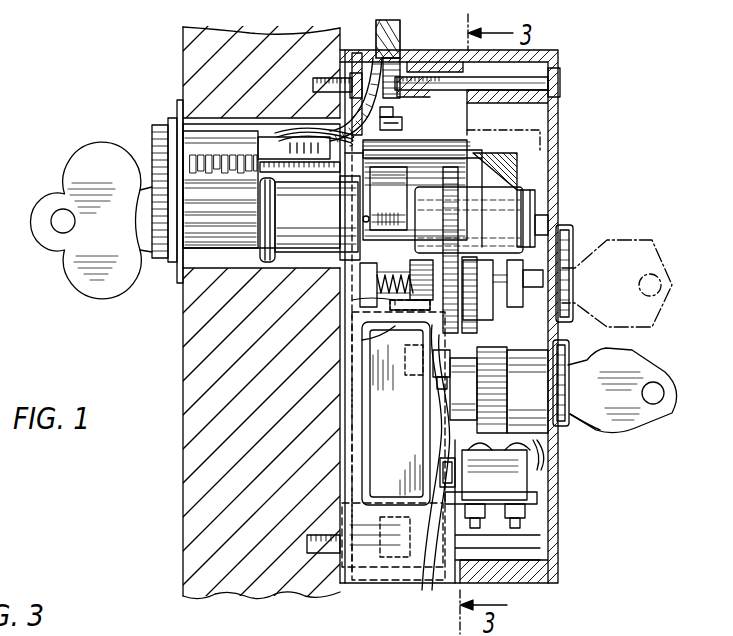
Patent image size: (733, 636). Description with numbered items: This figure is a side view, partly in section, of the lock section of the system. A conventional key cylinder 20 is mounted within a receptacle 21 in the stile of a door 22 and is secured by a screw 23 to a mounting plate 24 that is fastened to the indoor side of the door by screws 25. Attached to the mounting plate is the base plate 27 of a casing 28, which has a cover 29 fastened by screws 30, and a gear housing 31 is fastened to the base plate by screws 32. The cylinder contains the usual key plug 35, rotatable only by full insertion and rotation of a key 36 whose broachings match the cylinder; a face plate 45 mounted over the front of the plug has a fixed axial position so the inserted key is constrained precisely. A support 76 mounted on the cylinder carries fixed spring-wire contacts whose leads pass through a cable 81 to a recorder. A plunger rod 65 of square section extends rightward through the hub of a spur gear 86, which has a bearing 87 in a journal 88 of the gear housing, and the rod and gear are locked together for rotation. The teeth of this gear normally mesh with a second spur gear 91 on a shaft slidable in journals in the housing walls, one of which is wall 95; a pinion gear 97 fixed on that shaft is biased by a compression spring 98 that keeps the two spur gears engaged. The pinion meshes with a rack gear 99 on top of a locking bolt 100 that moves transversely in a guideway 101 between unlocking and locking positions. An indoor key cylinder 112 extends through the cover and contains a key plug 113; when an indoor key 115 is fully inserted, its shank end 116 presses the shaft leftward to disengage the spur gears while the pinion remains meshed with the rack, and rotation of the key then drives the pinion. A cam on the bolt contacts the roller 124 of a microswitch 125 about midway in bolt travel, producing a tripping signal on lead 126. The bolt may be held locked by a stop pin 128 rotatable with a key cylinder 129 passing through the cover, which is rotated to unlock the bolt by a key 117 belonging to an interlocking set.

The key cylinder 20 is at (206, 250).
The receptacle 21 is at (190, 126).
The door 22 is at (183, 365).
The screw 23 is at (330, 182).
The mounting plate 24 is at (340, 67).
The screws 25 is at (358, 80).
The base plate 27 is at (352, 118).
The casing 28 is at (425, 62).
The cover 29 is at (558, 139).
The screws 30 is at (560, 87).
The gear housing 31 is at (476, 147).
The screws 32 is at (402, 125).
The key plug 35 is at (318, 249).
The key 36 is at (82, 272).
The face plate 45 is at (160, 150).
The plunger rod 65 is at (390, 215).
The support 76 is at (272, 150).
The cable 81 is at (403, 59).
The spur gear 86 is at (442, 180).
The bearing 87 is at (536, 207).
The journal 88 is at (514, 195).
The spur gear 91 is at (412, 338).
The wall 95 is at (390, 303).
The pinion gear 97 is at (414, 268).
The compression spring 98 is at (375, 283).
The rack gear 99 is at (396, 320).
The locking bolt 100 is at (378, 448).
The guideway 101 is at (362, 505).
The key cylinder 112 is at (573, 238).
The key plug 113 is at (556, 341).
The indoor key 115 is at (640, 252).
The shank end 116 is at (474, 330).
The key 117 is at (640, 372).
The roller 124 is at (440, 470).
The microswitch 125 is at (535, 486).
The lead 126 is at (546, 447).
The stop pin 128 is at (438, 372).
The key cylinder 129 is at (592, 422).